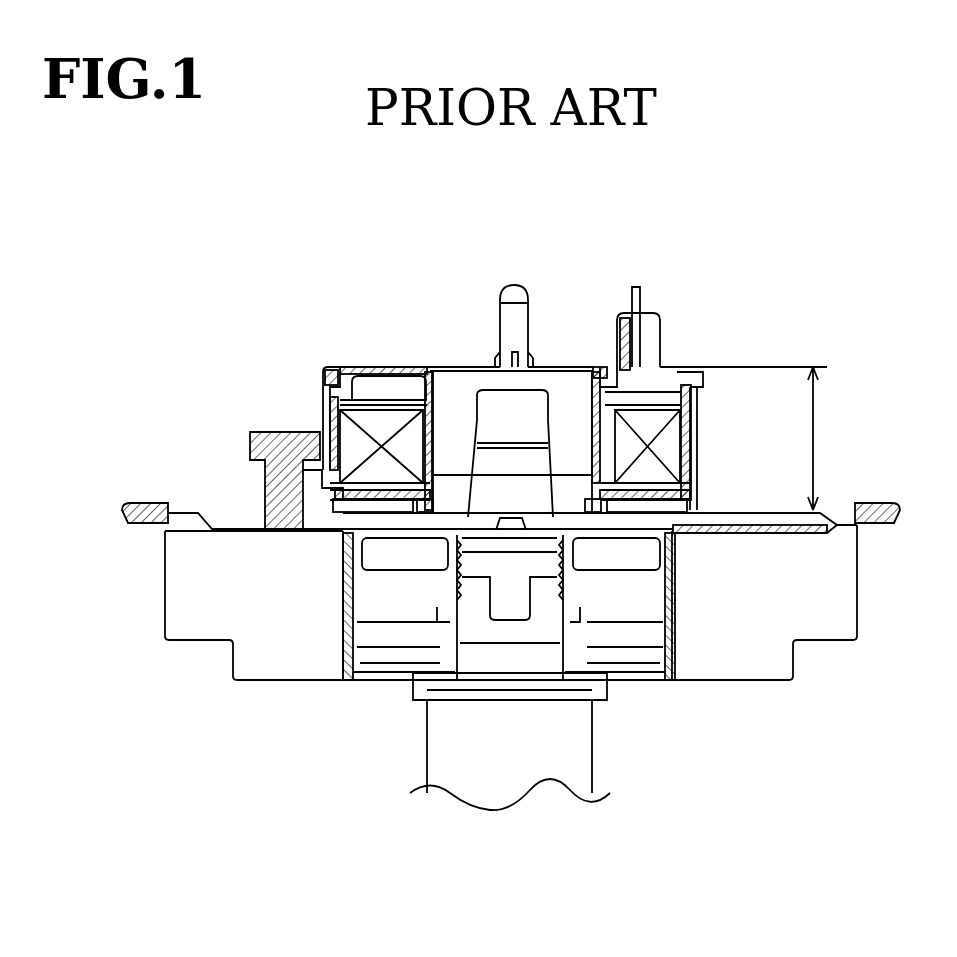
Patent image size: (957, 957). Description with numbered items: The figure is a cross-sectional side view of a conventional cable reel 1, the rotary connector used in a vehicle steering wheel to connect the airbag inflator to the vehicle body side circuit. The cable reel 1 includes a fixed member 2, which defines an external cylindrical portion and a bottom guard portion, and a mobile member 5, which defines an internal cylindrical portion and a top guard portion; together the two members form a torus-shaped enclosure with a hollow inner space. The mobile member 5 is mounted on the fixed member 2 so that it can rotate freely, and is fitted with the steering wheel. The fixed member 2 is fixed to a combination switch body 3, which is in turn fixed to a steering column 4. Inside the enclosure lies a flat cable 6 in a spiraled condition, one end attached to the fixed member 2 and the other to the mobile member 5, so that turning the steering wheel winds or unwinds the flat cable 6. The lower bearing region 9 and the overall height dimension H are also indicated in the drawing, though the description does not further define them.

The cable reel 1 is at (717, 438).
The fixed member 2 is at (687, 467).
The combination switch body 3 is at (775, 527).
The steering column 4 is at (592, 758).
The mobile member 5 is at (368, 366).
The flat cable 6 is at (345, 430).
The bearing holder 9 is at (445, 582).
The motor height H is at (816, 430).